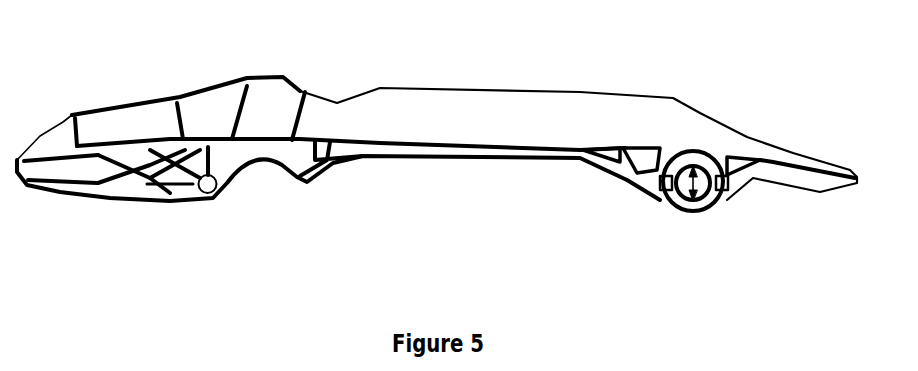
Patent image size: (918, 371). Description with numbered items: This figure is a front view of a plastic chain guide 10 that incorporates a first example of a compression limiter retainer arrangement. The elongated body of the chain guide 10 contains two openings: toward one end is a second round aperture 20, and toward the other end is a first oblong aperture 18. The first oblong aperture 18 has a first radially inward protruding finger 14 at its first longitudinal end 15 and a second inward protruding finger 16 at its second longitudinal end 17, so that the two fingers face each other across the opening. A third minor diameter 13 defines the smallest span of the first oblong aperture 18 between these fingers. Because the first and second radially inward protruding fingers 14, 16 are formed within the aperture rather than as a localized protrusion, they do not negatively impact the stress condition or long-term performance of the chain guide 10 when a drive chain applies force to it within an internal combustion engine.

The chain guide 10 is at (793, 88).
The third minor diameter 13 is at (693, 200).
The first radially inward protruding finger 14 is at (668, 195).
The first longitudinal end 15 is at (673, 170).
The second inward protruding finger 16 is at (722, 208).
The second longitudinal end 17 is at (710, 168).
The first oblong aperture 18 is at (688, 207).
The second round aperture 20 is at (207, 193).